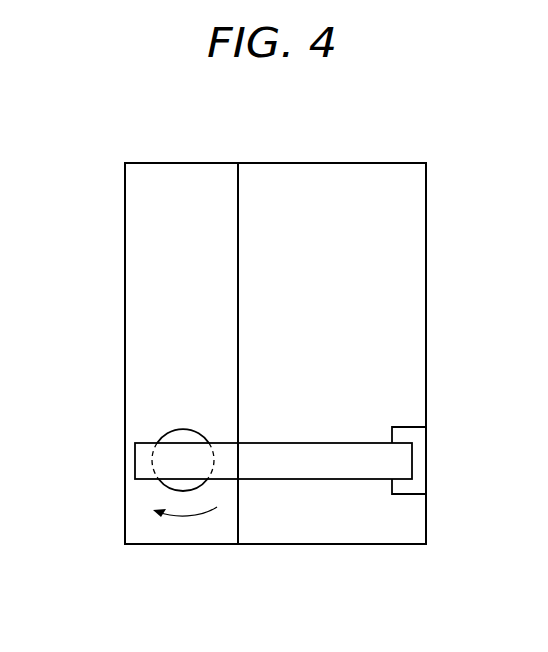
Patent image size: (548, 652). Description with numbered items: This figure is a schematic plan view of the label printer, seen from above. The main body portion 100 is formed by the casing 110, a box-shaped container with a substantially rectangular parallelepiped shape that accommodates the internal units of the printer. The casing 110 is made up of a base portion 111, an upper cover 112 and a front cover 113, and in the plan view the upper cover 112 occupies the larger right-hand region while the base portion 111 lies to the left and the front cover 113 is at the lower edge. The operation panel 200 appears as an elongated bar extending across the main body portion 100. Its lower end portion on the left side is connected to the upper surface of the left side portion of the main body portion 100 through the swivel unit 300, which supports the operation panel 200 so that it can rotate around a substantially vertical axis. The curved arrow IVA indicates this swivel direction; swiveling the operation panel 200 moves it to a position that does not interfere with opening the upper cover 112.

The main body portion 100 is at (325, 163).
The casing 110 is at (197, 163).
The base portion 111 is at (148, 279).
The upper cover 112 is at (387, 268).
The front cover 113 is at (362, 544).
The operation panel 200 is at (297, 481).
The swivel unit 300 is at (183, 429).